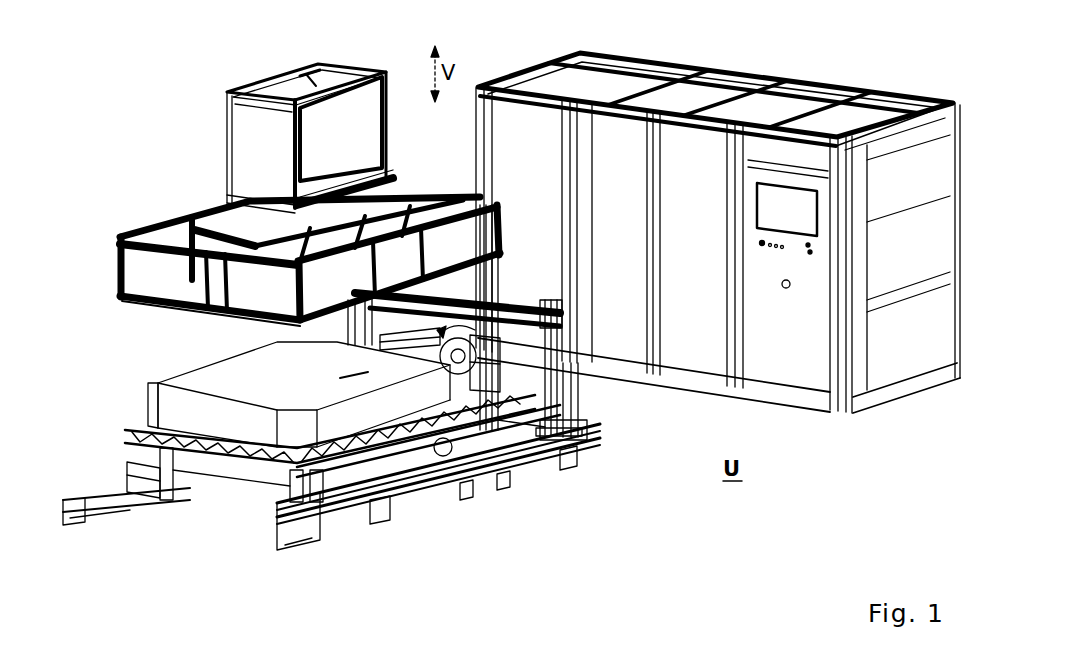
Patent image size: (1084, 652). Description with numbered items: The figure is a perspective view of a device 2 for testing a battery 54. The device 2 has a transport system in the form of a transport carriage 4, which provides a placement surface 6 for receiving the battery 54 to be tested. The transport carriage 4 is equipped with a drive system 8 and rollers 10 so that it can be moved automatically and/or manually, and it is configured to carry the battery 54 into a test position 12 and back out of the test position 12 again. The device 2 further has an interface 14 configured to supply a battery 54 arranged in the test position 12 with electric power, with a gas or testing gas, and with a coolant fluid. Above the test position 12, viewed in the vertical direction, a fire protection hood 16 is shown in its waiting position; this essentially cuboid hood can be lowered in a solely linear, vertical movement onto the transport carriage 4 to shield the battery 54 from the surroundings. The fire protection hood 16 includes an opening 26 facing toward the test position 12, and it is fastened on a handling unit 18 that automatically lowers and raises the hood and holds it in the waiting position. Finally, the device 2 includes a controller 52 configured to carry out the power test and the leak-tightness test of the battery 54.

The device 2 is at (132, 50).
The transport system / transport carriage 4 is at (137, 440).
The placement surface 6 is at (123, 424).
The drive system 8 is at (133, 458).
The rollers 10 is at (122, 478).
The test position 12 is at (226, 378).
The interface 14 is at (493, 360).
The fire protection hood 16 is at (172, 233).
The handling unit 18 is at (282, 73).
The opening 26 is at (172, 318).
The controller 52 is at (788, 177).
The battery 54 is at (152, 388).